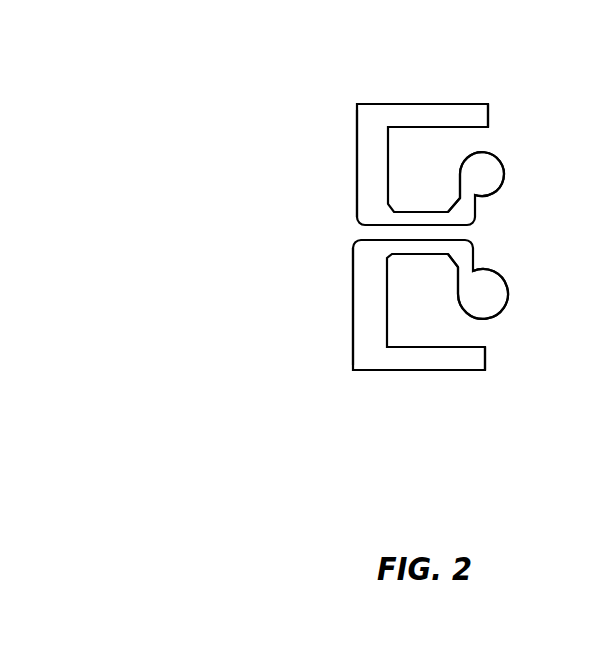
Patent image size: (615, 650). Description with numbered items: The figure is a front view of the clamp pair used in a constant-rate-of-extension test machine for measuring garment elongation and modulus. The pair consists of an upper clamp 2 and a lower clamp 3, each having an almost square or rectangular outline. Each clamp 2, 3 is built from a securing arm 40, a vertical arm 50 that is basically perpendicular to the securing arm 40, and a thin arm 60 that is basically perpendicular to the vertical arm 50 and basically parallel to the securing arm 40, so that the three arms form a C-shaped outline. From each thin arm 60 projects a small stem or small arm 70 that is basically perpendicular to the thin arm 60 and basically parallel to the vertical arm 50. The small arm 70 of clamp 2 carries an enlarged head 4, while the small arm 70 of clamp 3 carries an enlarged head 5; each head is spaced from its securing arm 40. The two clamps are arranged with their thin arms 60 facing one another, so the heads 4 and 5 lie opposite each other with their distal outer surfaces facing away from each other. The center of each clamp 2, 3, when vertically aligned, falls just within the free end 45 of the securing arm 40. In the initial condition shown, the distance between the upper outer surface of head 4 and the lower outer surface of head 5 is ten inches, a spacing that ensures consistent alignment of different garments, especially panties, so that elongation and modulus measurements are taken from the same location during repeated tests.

The clamp 2 is at (455, 110).
The clamp 3 is at (453, 362).
The head 4 is at (487, 175).
The head 5 is at (487, 302).
The securing arm 40 is at (405, 110).
The free end 45 is at (492, 110).
The vertical arm 50 is at (368, 168).
The thin arm 60 is at (405, 218).
The small arm 70 is at (462, 212).